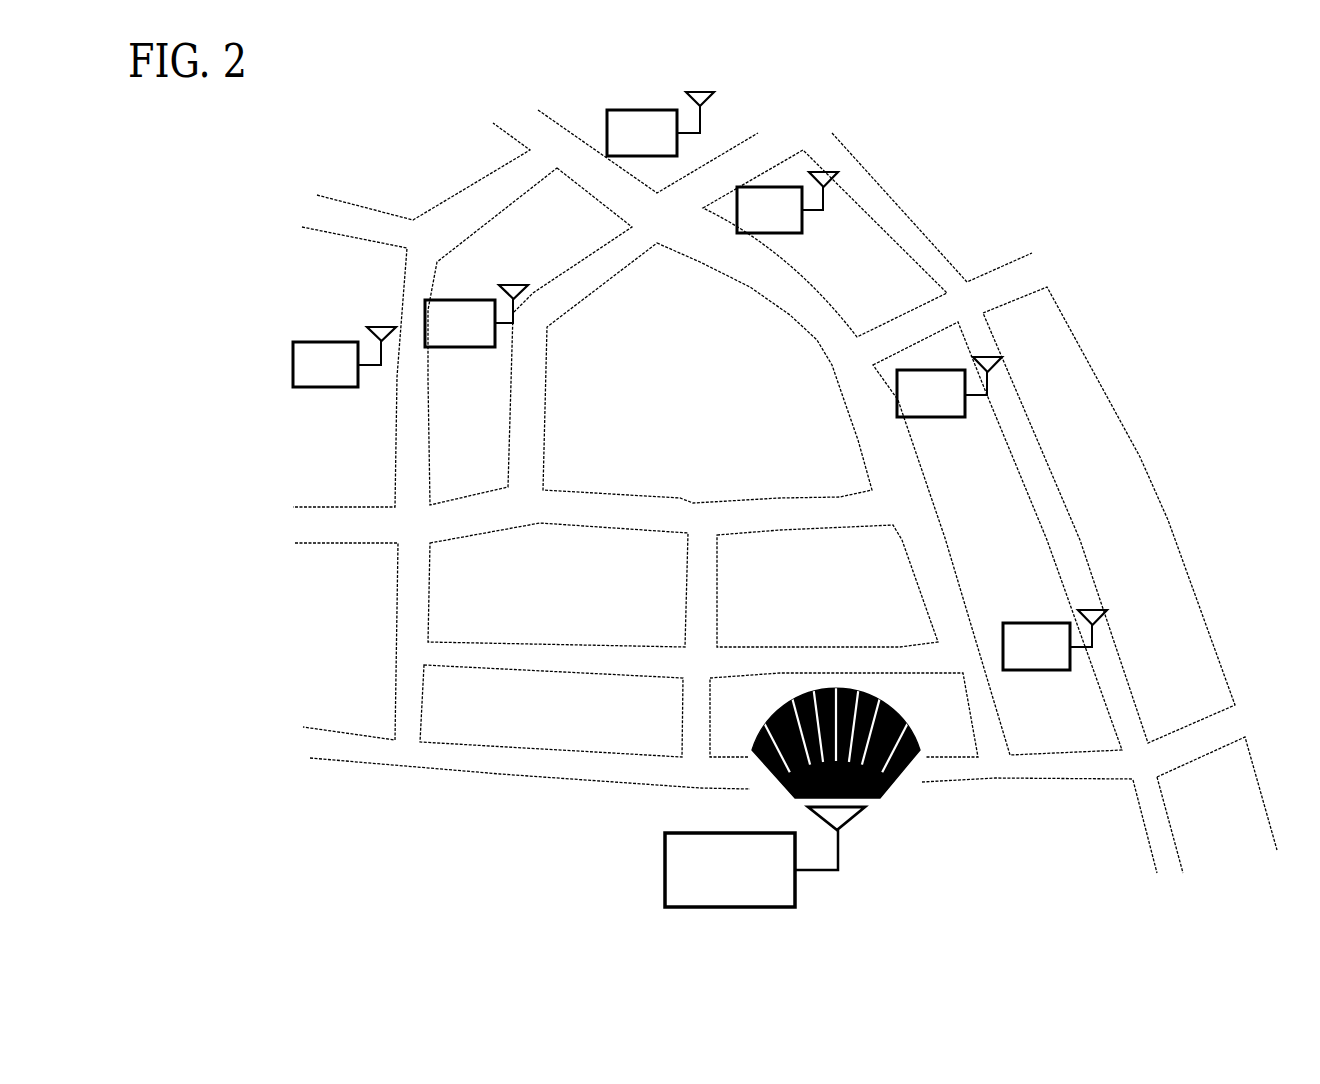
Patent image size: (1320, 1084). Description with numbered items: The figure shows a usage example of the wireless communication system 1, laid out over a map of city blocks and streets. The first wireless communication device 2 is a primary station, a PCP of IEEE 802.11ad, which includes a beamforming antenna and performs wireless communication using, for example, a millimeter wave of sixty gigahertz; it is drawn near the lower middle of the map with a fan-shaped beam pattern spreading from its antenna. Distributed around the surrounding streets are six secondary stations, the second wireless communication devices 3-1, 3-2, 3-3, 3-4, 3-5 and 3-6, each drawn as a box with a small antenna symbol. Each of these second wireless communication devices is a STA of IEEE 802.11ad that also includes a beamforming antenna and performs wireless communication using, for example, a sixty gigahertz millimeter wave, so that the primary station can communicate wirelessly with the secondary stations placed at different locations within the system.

The wireless communication system 1 is at (1072, 160).
The first wireless communication device 2 is at (733, 907).
The second wireless communication device 3-1 is at (323, 342).
The second wireless communication device 3-2 is at (458, 300).
The second wireless communication device 3-3 is at (642, 110).
The second wireless communication device 3-4 is at (773, 187).
The second wireless communication device 3-5 is at (928, 370).
The second wireless communication device 3-6 is at (1025, 622).